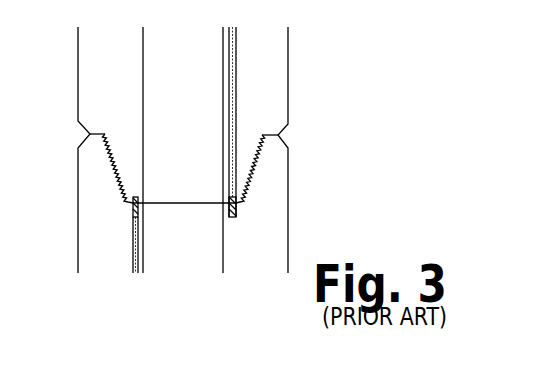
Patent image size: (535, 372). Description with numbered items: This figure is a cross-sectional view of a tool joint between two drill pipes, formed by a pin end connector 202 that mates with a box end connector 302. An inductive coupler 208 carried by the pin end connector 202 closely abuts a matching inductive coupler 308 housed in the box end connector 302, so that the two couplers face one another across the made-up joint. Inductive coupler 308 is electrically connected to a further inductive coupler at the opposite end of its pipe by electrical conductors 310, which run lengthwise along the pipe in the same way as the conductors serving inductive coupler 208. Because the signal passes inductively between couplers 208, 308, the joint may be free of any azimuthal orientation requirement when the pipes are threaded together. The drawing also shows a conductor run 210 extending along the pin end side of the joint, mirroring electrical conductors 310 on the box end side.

The pin end connector 202 is at (77, 117).
The box end connector 302 is at (77, 235).
The inner pipe / tube 210 is at (228, 86).
The inductive coupler 208 is at (142, 203).
The inductive coupler 308 is at (138, 206).
The electrical conductors 310 is at (138, 249).